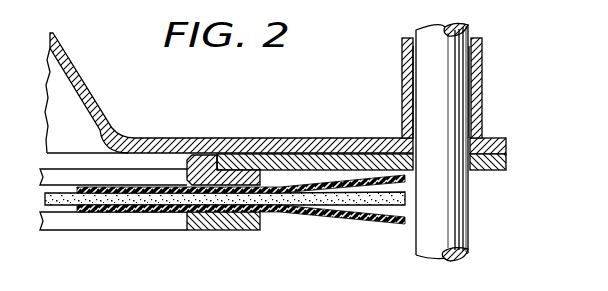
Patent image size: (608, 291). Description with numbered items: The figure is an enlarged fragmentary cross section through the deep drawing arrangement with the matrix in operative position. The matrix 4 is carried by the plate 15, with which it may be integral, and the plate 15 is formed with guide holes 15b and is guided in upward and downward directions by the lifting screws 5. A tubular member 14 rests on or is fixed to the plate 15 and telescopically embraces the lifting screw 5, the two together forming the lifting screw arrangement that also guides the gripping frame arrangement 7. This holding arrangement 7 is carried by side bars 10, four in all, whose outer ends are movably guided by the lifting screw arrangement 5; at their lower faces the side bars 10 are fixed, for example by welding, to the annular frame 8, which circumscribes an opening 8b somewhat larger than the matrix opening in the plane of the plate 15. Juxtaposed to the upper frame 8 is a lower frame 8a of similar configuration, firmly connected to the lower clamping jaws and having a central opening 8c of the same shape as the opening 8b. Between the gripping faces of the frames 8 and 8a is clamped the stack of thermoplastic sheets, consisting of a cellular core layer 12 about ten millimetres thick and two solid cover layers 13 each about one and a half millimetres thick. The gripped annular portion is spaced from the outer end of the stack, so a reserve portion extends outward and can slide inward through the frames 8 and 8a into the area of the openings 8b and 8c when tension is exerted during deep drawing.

The matrix 4 is at (47, 105).
The lifting screw 5 is at (450, 210).
The gripping frame arrangement 7 is at (131, 248).
The annular frame 8 is at (225, 170).
The lower frame 8a is at (212, 228).
The opening 8b is at (136, 175).
The central opening 8c is at (75, 226).
The side bar 10 is at (272, 162).
The cellular core layer 12 is at (287, 212).
The cover layer 13 is at (347, 212).
The tubular member 14 is at (482, 83).
The plate 15 is at (312, 147).
The guide hole 15b is at (419, 140).